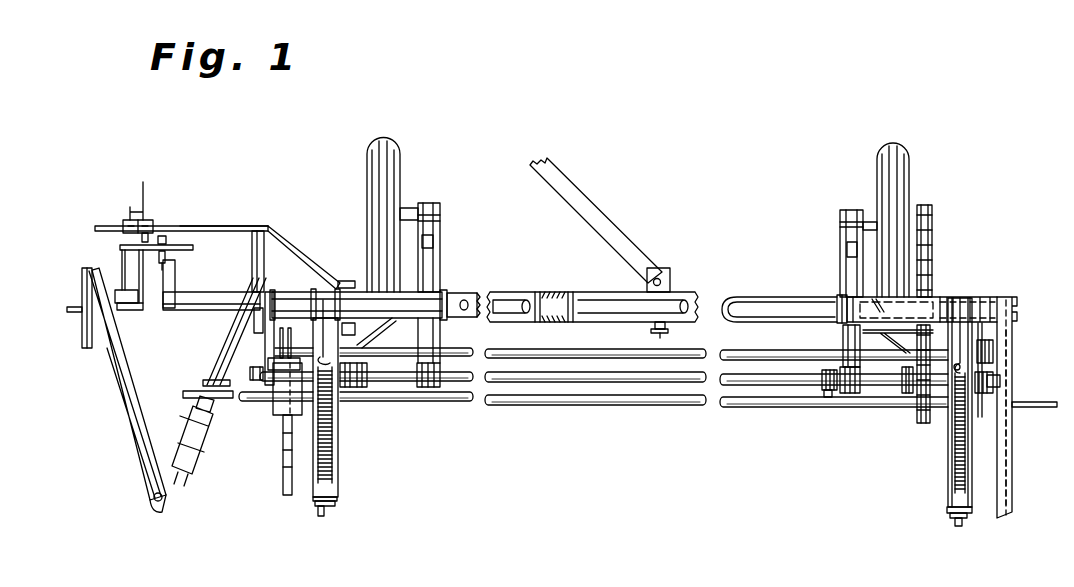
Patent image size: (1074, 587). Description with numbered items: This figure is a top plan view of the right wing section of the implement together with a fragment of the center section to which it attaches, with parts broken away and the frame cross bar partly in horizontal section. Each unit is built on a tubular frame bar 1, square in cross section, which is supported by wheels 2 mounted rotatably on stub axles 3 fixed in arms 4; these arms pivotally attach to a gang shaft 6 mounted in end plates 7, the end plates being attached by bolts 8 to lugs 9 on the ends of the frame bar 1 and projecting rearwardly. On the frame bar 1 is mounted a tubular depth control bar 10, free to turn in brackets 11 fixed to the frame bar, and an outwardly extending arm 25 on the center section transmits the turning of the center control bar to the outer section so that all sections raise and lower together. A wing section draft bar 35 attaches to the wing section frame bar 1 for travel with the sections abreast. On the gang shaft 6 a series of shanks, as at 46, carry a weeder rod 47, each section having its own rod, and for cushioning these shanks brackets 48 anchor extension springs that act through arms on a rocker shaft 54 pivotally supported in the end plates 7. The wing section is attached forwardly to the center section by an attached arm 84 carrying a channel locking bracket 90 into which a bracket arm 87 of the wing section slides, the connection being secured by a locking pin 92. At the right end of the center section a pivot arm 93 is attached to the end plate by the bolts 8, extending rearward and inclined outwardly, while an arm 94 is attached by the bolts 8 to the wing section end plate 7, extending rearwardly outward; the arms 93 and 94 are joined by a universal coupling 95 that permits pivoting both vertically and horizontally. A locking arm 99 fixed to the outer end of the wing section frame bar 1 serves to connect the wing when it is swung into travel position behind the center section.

The attached arm 84 is at (95, 226).
The locking pin 92 is at (188, 195).
The channel locking bracket 90 is at (233, 195).
The bracket arm 87 is at (298, 228).
The bolt 8 is at (82, 290).
The outwardly extending arm 25 is at (194, 248).
The end plate 7 is at (265, 272).
The tubular depth control bar 10 is at (458, 293).
The arm 94 is at (218, 333).
The pivot arm 93 is at (127, 373).
The universal coupling 95 is at (200, 457).
The shank 46 is at (283, 493).
The stub axle 3 is at (404, 208).
The arm 4 is at (434, 204).
The wing section draft bar 35 is at (580, 193).
The tubular frame bar 1 is at (527, 292).
The rocker shaft 54 is at (545, 322).
The gang shaft 6 is at (593, 373).
The weeder rod 47 is at (632, 403).
The wheel 2 is at (910, 197).
The bracket 11 is at (822, 430).
The lug 9 is at (993, 298).
The bracket 48 is at (948, 482).
The locking arm 99 is at (1012, 487).